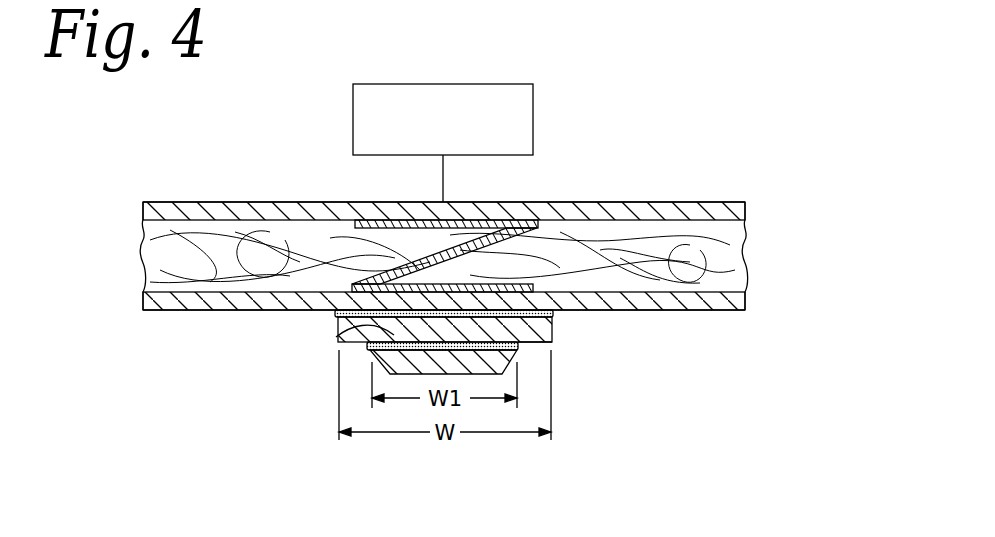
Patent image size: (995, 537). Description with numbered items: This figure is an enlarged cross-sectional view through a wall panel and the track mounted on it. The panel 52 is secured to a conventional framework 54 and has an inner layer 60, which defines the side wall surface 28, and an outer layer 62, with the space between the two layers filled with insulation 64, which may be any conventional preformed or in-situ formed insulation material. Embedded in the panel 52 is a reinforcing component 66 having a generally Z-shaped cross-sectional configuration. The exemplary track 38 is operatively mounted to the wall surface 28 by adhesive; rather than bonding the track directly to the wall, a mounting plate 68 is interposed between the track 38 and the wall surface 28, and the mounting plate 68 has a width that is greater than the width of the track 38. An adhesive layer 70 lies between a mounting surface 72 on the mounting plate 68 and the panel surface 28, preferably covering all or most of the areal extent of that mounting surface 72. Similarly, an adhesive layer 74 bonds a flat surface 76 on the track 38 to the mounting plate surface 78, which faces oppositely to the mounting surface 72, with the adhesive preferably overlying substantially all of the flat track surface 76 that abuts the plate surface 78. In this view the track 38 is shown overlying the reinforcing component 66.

The side wall surface 28 is at (702, 311).
The track 38 is at (408, 362).
The panel 52 is at (687, 202).
The framework 54 is at (432, 145).
The inner layer 60 is at (250, 311).
The outer layer 62 is at (232, 202).
The insulation 64 is at (168, 258).
The reinforcing component 66 is at (490, 225).
The mounting plate 68 is at (521, 350).
The adhesive layer 70 is at (350, 308).
The mounting surface 72 is at (539, 315).
The adhesive layer 74 is at (448, 336).
The flat surface 76 is at (336, 337).
The mounting plate surface 78 is at (553, 346).